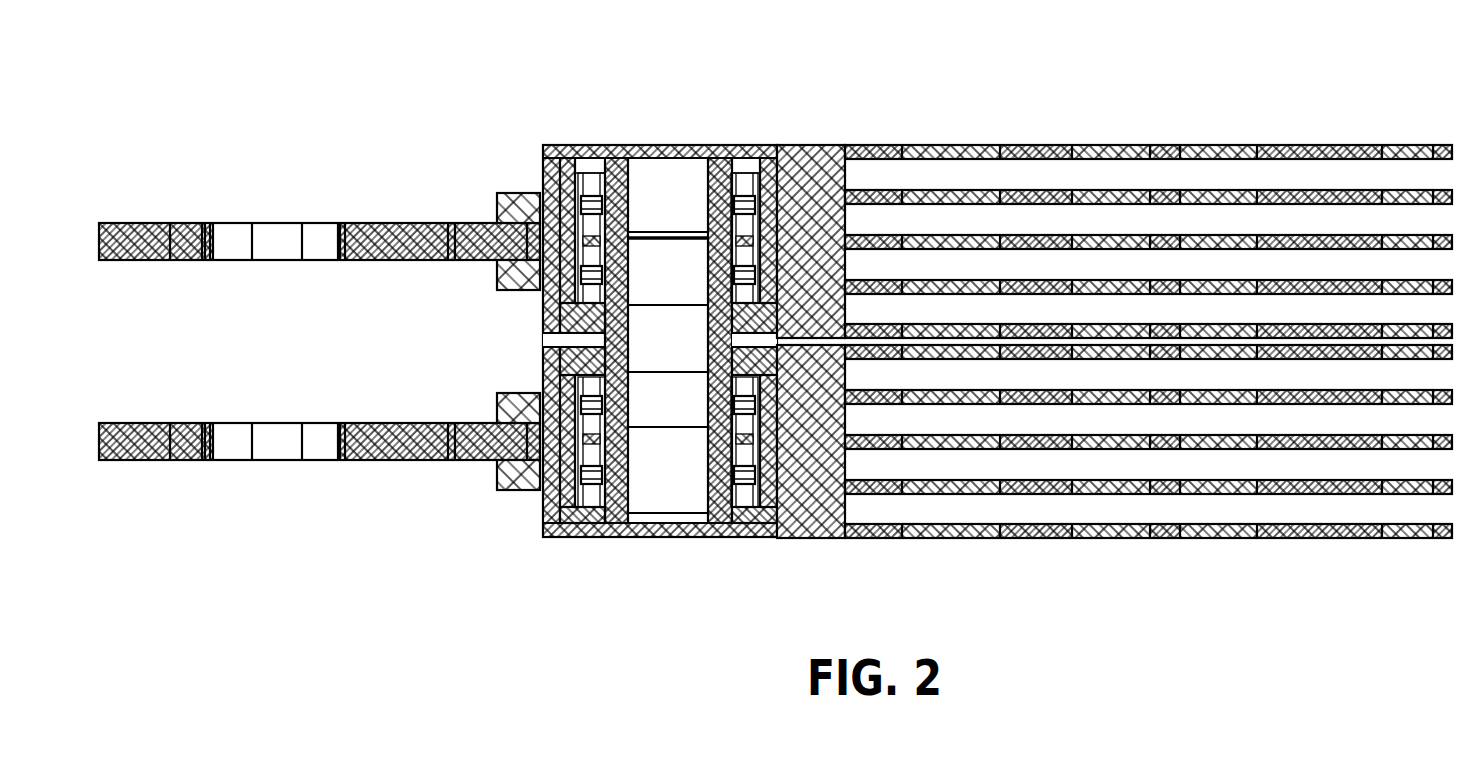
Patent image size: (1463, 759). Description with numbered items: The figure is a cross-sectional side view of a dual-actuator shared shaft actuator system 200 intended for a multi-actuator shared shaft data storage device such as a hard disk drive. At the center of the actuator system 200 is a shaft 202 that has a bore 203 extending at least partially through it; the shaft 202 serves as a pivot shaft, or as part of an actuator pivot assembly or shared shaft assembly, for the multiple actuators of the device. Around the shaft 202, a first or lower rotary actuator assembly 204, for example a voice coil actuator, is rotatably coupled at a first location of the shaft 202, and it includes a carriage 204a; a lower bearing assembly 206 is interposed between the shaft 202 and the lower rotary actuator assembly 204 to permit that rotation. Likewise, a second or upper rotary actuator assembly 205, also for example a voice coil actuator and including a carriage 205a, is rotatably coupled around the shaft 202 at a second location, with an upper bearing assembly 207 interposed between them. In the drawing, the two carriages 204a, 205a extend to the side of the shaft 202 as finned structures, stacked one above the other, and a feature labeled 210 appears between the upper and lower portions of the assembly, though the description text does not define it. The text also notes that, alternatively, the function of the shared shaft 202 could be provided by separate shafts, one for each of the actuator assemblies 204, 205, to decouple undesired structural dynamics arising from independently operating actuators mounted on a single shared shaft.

The actuator system 200 is at (1016, 110).
The shaft 202 is at (622, 173).
The bore 203 is at (667, 188).
The lower rotary actuator assembly 204 is at (420, 452).
The carriage 204a is at (825, 530).
The upper rotary actuator assembly 205 is at (420, 224).
The carriage 205a is at (815, 183).
The lower bearing assembly 206 is at (757, 497).
The upper bearing assembly 207 is at (742, 188).
The gap 210 is at (603, 345).